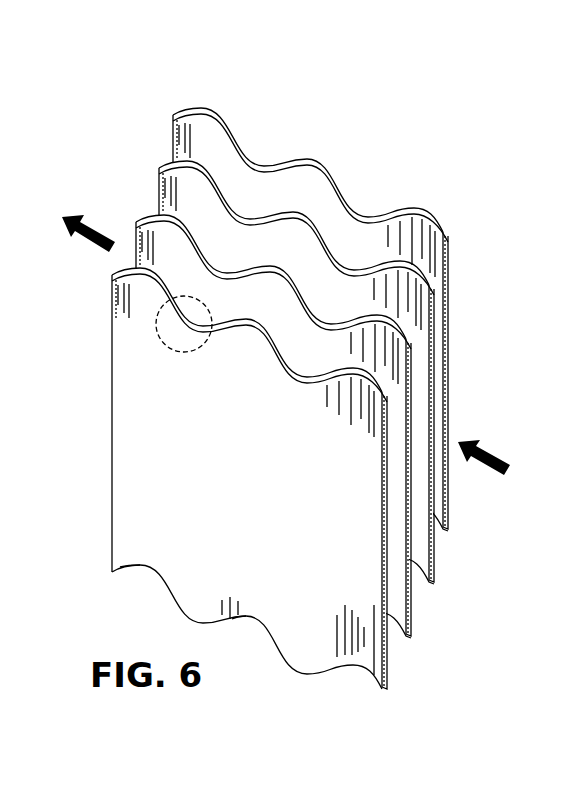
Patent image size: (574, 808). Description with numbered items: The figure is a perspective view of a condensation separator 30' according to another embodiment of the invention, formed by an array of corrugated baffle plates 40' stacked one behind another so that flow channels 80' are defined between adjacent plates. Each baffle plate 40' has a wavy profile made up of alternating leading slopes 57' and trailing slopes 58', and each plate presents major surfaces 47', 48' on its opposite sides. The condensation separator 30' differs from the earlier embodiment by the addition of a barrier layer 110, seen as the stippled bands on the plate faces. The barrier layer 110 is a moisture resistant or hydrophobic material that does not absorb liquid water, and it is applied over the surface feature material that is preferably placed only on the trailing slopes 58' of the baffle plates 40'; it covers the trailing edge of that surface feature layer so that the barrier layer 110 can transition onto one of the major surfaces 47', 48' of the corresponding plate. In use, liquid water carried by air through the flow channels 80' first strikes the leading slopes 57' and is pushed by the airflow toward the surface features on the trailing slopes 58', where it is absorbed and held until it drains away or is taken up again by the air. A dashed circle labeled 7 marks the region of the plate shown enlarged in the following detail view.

The heat exchanger core / plate stack 30' is at (271, 365).
The corrugated plate 40' is at (262, 489).
The flow channels between plates 80' is at (292, 373).
The plate end edge 48' is at (431, 461).
The plate side surface 47' is at (428, 583).
The surface coating 110 is at (214, 483).
The trough of corrugation 57' is at (247, 638).
The crest of corrugation 58' is at (201, 626).
The detail circle (FIG. 7) 7 is at (140, 342).